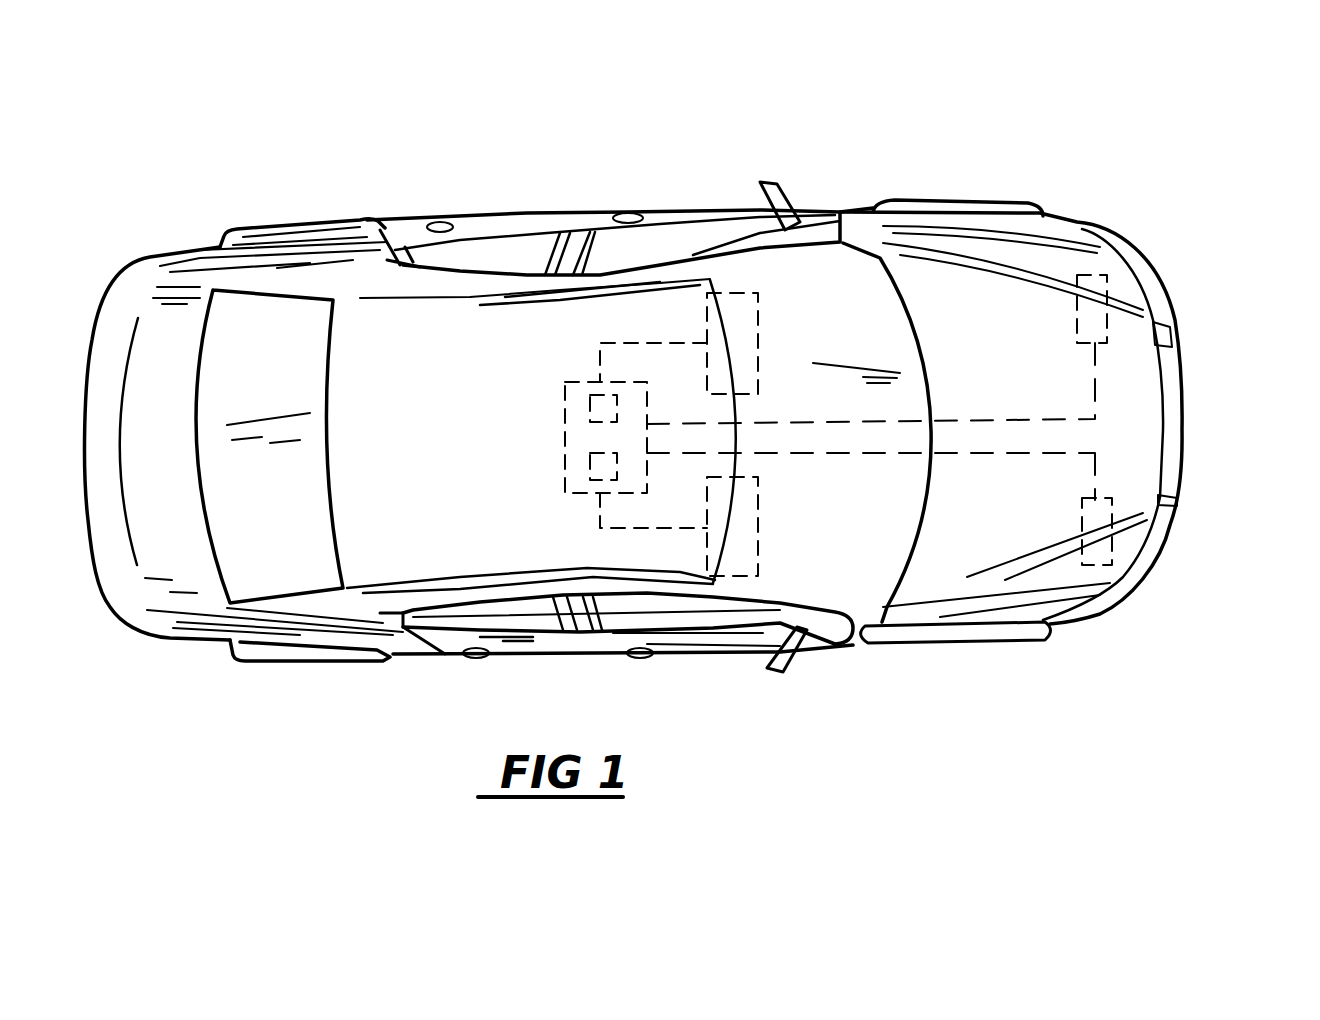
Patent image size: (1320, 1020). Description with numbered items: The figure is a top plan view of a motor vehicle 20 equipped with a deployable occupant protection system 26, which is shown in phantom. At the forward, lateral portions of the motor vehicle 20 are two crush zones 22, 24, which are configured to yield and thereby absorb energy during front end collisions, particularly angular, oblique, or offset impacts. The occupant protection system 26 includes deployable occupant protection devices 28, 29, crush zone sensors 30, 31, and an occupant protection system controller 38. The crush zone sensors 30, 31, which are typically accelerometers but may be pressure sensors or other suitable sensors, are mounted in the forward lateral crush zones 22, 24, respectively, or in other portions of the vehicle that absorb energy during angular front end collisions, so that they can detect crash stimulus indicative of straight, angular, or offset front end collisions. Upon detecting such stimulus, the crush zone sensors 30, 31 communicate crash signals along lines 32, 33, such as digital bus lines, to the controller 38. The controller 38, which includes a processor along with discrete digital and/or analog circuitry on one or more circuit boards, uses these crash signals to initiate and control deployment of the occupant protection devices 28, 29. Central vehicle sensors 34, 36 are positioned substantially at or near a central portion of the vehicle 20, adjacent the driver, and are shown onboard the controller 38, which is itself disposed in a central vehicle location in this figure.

The motor vehicle 20 is at (497, 177).
The crush zone 22 is at (1180, 203).
The crush zone 24 is at (1157, 572).
The occupant protection system 26 is at (858, 530).
The deployable occupant protection device 28 is at (758, 300).
The deployable occupant protection device 29 is at (758, 483).
The crush zone sensor 30 is at (1107, 332).
The crush zone sensor 31 is at (1110, 497).
The line 32 is at (1053, 362).
The line 33 is at (1062, 453).
The central vehicle sensor 34 is at (590, 397).
The central vehicle sensor 36 is at (590, 466).
The occupant protection system controller 38 is at (565, 423).